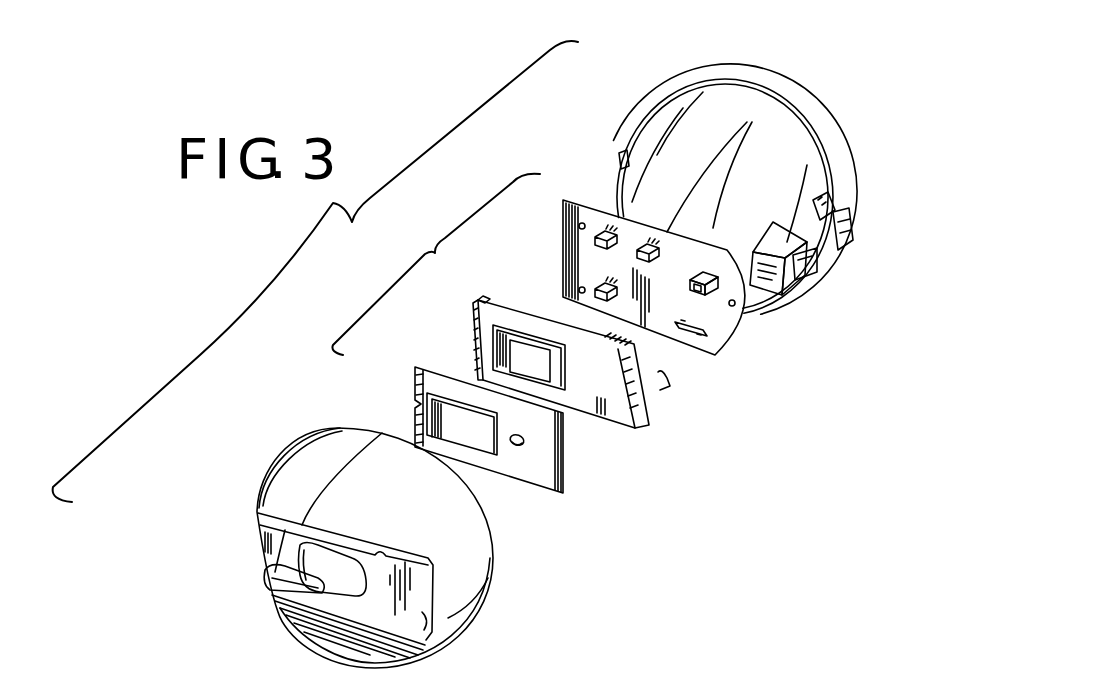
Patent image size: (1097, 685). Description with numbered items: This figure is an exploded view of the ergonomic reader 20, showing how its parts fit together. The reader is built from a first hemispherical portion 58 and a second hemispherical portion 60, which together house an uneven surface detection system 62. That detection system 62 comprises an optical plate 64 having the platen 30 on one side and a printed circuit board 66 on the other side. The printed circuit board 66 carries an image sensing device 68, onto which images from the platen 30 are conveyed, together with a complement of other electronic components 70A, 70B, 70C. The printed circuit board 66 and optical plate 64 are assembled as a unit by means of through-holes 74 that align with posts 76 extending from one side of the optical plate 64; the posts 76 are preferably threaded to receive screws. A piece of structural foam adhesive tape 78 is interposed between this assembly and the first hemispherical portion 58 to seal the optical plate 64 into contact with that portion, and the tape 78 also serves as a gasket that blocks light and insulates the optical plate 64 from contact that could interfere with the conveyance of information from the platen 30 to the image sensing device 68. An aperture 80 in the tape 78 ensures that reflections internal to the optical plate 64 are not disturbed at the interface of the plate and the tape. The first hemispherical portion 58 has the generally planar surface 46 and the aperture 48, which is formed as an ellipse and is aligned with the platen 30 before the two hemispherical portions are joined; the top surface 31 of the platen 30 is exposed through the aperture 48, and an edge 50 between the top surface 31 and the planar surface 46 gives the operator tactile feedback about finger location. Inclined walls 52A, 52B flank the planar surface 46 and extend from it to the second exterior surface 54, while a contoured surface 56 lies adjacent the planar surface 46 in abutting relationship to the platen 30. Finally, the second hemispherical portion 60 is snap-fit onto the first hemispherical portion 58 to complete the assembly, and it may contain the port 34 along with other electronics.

The ergonomic reader 20 is at (693, 463).
The platen 30 is at (520, 352).
The top surface of the platen 31 is at (543, 362).
The port 34 is at (848, 234).
The planar surface 46 is at (424, 615).
The aperture 48 is at (322, 590).
The edge 50 is at (352, 575).
The wall 52A is at (384, 554).
The wall 52B is at (333, 635).
The second exterior surface 54 is at (330, 446).
The contoured surface 56 is at (278, 553).
The first hemispherical portion 58 is at (482, 561).
The second hemispherical portion 60 is at (793, 91).
The uneven surface detection system 62 is at (432, 249).
The optical plate 64 is at (628, 417).
The printed circuit board 66 is at (724, 338).
The image sensing device 68 is at (711, 275).
The electronic component 70A is at (603, 231).
The electronic component 70B is at (600, 284).
The electronic component 70C is at (643, 247).
The through-holes 74 is at (579, 226).
The posts 76 is at (503, 293).
The structural foam adhesive tape 78 is at (566, 480).
The aperture in the tape 80 is at (516, 446).